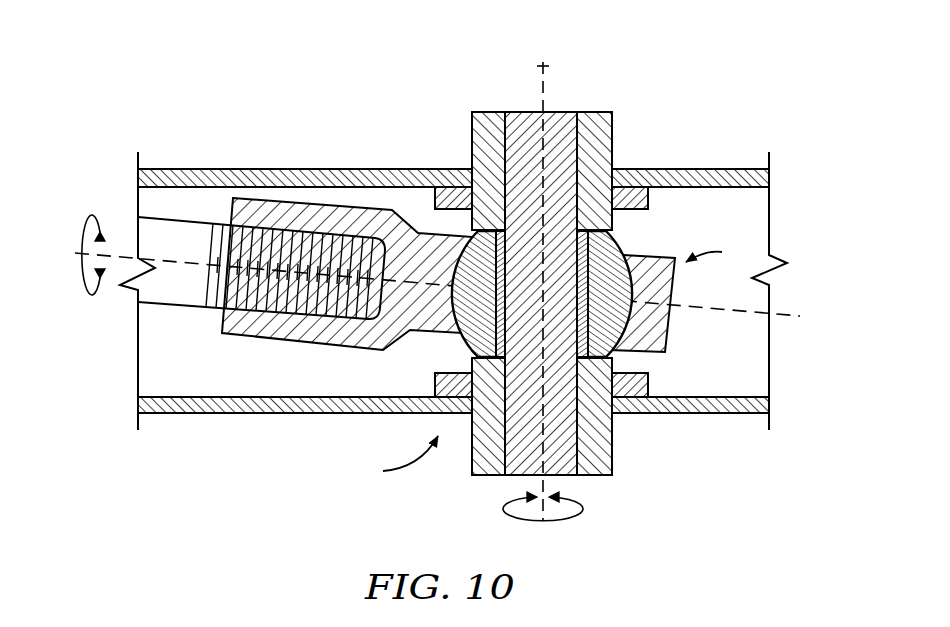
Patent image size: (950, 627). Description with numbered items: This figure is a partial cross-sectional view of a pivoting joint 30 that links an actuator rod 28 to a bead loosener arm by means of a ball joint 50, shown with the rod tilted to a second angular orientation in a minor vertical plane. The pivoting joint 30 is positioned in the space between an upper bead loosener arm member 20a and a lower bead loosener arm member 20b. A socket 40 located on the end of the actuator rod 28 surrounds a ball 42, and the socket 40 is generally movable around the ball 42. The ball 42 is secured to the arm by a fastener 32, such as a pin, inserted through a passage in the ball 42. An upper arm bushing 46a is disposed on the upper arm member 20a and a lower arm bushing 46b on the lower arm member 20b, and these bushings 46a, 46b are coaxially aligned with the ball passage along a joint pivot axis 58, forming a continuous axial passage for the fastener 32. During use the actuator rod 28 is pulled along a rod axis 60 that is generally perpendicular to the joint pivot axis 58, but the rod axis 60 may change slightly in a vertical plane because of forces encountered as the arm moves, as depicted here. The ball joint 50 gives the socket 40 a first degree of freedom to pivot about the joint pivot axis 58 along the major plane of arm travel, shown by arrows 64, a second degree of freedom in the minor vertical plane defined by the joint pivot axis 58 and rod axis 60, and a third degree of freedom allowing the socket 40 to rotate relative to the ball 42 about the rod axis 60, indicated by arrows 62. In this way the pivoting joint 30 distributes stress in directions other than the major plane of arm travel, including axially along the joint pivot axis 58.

The upper bead loosener arm member 20a is at (330, 168).
The lower bead loosener arm member 20b is at (290, 414).
The actuator rod 28 is at (175, 300).
The pivoting joint 30 is at (396, 462).
The fastener 32 is at (518, 118).
The socket 40 is at (432, 328).
The ball 42 is at (628, 238).
The upper arm bushing 46a is at (612, 138).
The lower arm bushing 46b is at (612, 455).
The ball joint 50 is at (718, 253).
The joint pivot axis 58 is at (549, 66).
The rod axis 60 is at (70, 253).
The arrows indicating rotation about rod axis 62 is at (97, 222).
The arrows indicating pivoting about joint pivot axis 64 is at (578, 512).